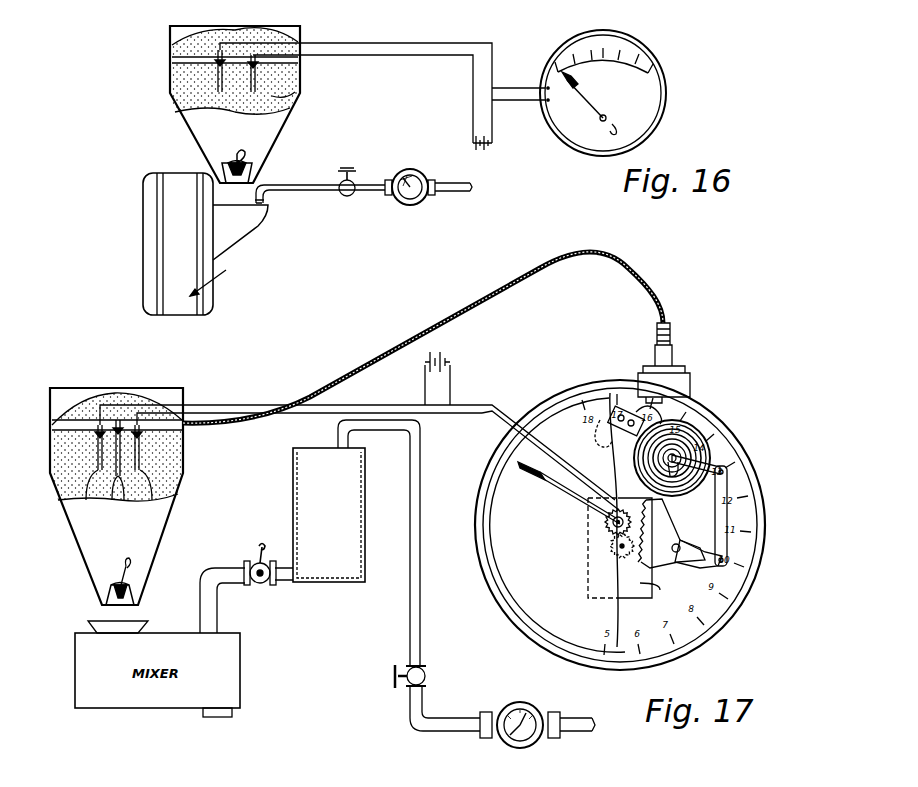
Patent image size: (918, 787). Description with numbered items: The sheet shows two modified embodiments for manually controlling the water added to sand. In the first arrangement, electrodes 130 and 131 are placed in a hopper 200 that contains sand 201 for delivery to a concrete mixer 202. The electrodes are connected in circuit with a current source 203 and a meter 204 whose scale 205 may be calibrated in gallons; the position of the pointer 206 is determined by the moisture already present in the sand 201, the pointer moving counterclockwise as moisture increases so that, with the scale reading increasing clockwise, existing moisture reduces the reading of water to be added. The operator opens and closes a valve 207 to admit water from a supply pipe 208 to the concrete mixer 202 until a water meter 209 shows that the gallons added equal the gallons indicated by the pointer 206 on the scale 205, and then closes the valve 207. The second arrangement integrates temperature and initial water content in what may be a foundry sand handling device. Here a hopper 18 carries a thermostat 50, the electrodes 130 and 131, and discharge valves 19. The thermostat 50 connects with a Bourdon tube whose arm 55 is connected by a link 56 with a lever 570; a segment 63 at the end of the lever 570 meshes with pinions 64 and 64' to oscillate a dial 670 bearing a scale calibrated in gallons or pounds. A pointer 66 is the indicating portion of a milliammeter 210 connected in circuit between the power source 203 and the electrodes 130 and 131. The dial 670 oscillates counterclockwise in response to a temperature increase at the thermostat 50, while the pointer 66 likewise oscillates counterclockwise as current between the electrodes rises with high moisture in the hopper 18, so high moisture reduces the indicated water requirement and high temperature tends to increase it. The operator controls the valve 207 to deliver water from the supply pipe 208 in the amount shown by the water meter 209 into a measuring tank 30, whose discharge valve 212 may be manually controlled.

In FIG. 17, the hopper 18 is at (147, 537).
In FIG. 17, the discharge valves 19 is at (106, 608).
In FIG. 17, the measuring tank 30 is at (293, 516).
In FIG. 17, the thermostat 50 is at (118, 500).
In FIG. 17, the arm 55 is at (706, 440).
In FIG. 17, the link 56 is at (727, 511).
In FIG. 17, the segment 63 is at (643, 538).
In FIG. 17, the pinion 64 is at (601, 548).
In FIG. 17, the pinion 64' is at (592, 545).
In FIG. 17, the pointer 66 is at (562, 490).
In FIG. 16, the electrode 130 is at (215, 80).
In FIG. 17, the electrode 130 is at (92, 498).
In FIG. 16, the electrode 131 is at (270, 80).
In FIG. 17, the electrode 131 is at (148, 500).
In FIG. 16, the hopper 200 is at (186, 105).
In FIG. 16, the sand 201 is at (300, 100).
In FIG. 16, the concrete mixer 202 is at (170, 240).
In FIG. 16, the current source 203 is at (484, 150).
In FIG. 17, the current source 203 is at (442, 352).
In FIG. 16, the meter 204 is at (645, 117).
In FIG. 16, the scale 205 is at (627, 54).
In FIG. 16, the pointer 206 is at (600, 107).
In FIG. 16, the valve 207 is at (345, 200).
In FIG. 17, the valve 207 is at (392, 677).
In FIG. 16, the supply pipe 208 is at (456, 194).
In FIG. 17, the supply pipe 208 is at (569, 718).
In FIG. 16, the water meter 209 is at (410, 205).
In FIG. 17, the water meter 209 is at (521, 703).
In FIG. 17, the milliammeter 210 is at (646, 584).
In FIG. 17, the discharge valve 212 is at (261, 585).
In FIG. 17, the lever 570 is at (707, 565).
In FIG. 17, the dial 670 is at (618, 624).